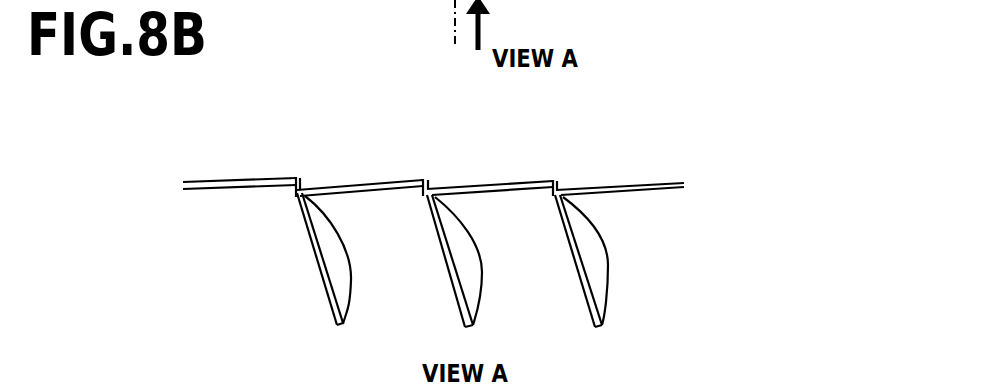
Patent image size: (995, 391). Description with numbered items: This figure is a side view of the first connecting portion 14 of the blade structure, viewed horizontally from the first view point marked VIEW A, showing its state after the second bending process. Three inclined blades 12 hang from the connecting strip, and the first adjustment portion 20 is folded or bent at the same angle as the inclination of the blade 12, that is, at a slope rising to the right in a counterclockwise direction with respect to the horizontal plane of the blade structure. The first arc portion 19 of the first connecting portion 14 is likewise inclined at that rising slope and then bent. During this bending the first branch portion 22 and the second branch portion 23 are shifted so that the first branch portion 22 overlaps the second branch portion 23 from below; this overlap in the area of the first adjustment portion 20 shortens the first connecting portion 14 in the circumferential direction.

The blade 12 is at (450, 259).
The first connecting portion 14 is at (465, 151).
The first arc portion 19 is at (473, 189).
The first adjustment portion 20 is at (565, 189).
The first branch portion 22 is at (296, 192).
The second branch portion 23 is at (293, 179).